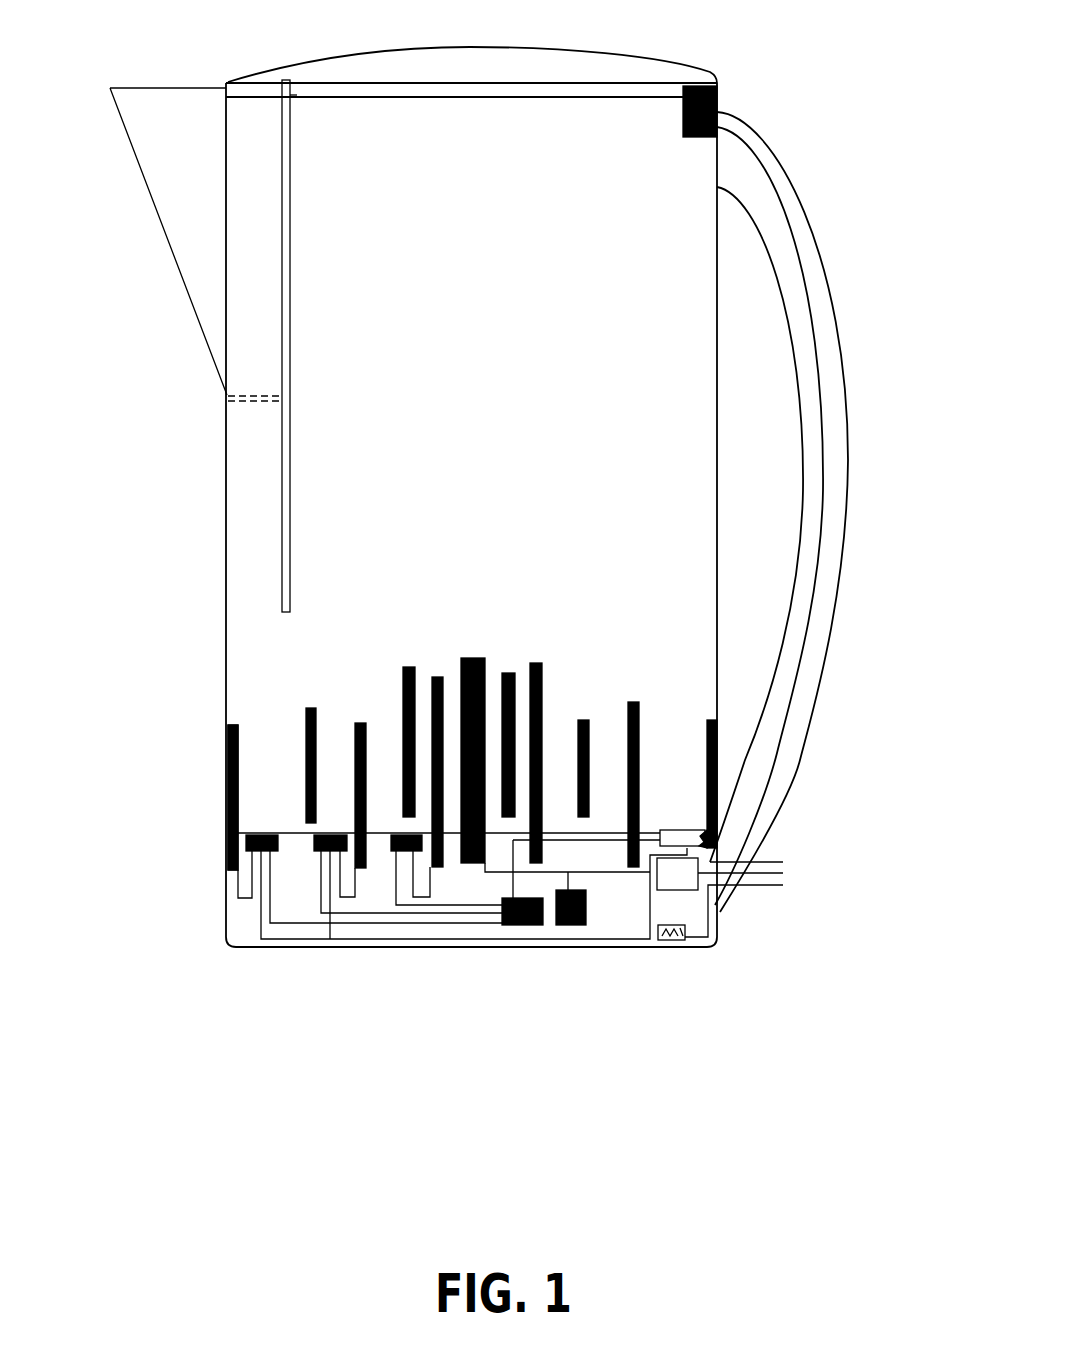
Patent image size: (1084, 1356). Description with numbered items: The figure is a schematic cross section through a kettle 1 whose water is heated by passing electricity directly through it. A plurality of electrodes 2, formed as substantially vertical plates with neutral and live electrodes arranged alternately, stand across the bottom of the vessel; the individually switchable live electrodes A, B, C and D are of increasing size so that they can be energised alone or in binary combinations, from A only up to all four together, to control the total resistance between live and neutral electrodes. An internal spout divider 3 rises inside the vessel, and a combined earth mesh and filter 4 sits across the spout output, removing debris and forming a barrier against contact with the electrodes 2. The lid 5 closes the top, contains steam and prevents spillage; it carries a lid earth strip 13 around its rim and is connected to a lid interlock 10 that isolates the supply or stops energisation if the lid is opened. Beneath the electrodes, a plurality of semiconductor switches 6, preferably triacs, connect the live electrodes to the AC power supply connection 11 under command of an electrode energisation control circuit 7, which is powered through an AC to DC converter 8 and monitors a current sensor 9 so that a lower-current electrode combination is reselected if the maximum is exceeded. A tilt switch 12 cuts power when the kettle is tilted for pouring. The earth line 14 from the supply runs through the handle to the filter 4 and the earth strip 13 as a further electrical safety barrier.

The kettle 1 is at (212, 633).
The electrodes 2 is at (226, 760).
The internal spout divider 3 is at (268, 538).
The earth mesh 4 is at (227, 405).
The lid 5 is at (350, 57).
The semiconductor switches 6 is at (688, 840).
The electrode energisation control circuit 7 is at (520, 926).
The AC to DC converter 8 is at (578, 926).
The current sensor 9 is at (680, 938).
The lid interlock 10 is at (717, 128).
The AC power supply connection 11 is at (788, 873).
The tilt switch 12 is at (688, 885).
The lid earth strip 13 is at (570, 88).
The earth line 14 is at (722, 793).
The electrode A is at (238, 723).
The electrode B is at (707, 718).
The electrode C is at (360, 722).
The electrode D is at (437, 672).